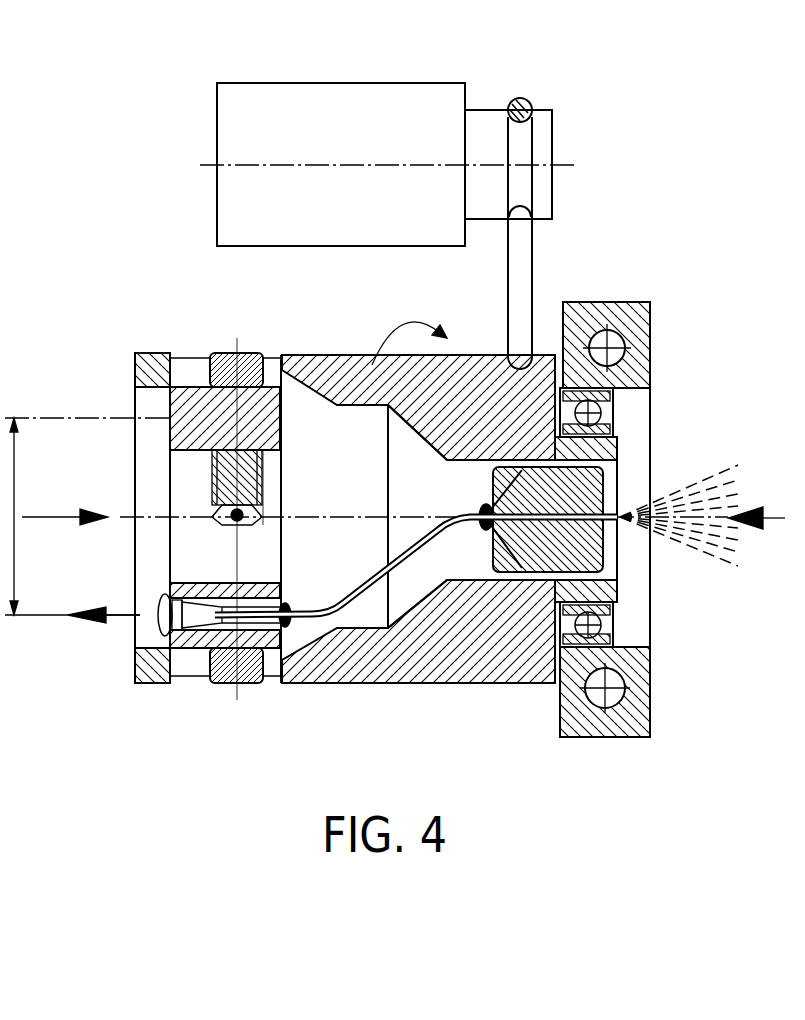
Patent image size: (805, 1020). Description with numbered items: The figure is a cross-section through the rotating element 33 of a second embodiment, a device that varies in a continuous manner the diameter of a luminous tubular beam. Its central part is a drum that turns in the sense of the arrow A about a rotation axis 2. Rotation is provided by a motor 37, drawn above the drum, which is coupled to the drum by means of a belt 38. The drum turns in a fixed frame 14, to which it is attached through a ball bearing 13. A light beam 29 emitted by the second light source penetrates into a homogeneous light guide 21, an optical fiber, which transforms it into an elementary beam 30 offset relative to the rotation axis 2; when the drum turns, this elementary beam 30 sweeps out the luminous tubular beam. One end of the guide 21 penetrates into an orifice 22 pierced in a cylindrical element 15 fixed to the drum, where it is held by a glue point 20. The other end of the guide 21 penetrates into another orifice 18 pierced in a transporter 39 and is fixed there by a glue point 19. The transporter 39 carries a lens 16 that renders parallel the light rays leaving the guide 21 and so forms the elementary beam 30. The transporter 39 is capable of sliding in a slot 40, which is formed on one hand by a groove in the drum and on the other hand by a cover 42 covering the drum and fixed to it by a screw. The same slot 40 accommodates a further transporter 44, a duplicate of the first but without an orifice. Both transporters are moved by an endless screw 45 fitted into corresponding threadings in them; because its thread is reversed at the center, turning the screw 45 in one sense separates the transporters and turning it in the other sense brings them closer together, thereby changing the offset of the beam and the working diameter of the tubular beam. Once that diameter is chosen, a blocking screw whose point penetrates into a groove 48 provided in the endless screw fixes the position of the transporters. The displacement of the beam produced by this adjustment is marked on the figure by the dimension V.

The rotation axis 2 is at (782, 516).
The ball bearing 13 is at (617, 410).
The fixed frame 14 is at (652, 302).
The cylindrical element 15 is at (597, 480).
The lens 16 is at (128, 632).
The orifice 18 is at (273, 683).
The glue point 19 is at (285, 628).
The glue point 20 is at (483, 522).
The homogeneous light guide 21 is at (415, 545).
The orifice 22 is at (496, 528).
The light beam 29 is at (730, 568).
The elementary beam 30 is at (60, 618).
The rotating element 33 is at (338, 352).
The motor 37 is at (315, 110).
The belt 38 is at (517, 257).
The transporter 39 is at (278, 577).
The slot 40 is at (268, 492).
The cover 42 is at (150, 353).
The further transporter 44 is at (170, 390).
The endless screw 45 is at (217, 355).
The groove 48 is at (258, 513).
The arrow A is at (372, 365).
The displacement V is at (55, 511).